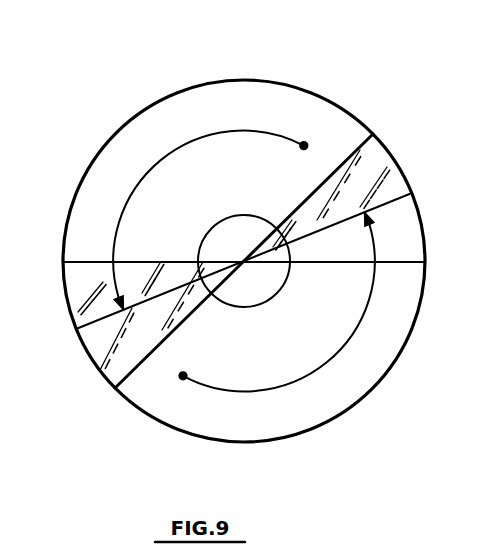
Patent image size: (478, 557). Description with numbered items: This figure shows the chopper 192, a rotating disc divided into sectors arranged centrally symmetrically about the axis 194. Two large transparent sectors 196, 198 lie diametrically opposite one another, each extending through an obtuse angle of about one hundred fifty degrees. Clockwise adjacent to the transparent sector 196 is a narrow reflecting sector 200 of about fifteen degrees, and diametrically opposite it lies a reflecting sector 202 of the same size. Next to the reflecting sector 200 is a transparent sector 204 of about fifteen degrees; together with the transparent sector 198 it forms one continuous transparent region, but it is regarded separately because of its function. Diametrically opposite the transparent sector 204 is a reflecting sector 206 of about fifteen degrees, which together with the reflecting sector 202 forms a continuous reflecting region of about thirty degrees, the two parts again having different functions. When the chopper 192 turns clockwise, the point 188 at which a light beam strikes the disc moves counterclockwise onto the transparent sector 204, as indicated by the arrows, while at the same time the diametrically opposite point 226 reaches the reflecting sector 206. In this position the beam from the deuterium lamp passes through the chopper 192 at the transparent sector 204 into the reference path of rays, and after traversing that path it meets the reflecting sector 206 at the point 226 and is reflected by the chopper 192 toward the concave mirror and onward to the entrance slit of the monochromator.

The point 188 is at (183, 380).
The chopper 192 is at (265, 72).
The axis 194 is at (258, 298).
The transparent sector 196 is at (215, 92).
The transparent sector 198 is at (368, 365).
The reflecting sector 200 is at (377, 170).
The reflecting sector 202 is at (102, 367).
The transparent sector 204 is at (405, 233).
The reflecting sector 206 is at (72, 287).
The point 226 is at (305, 143).